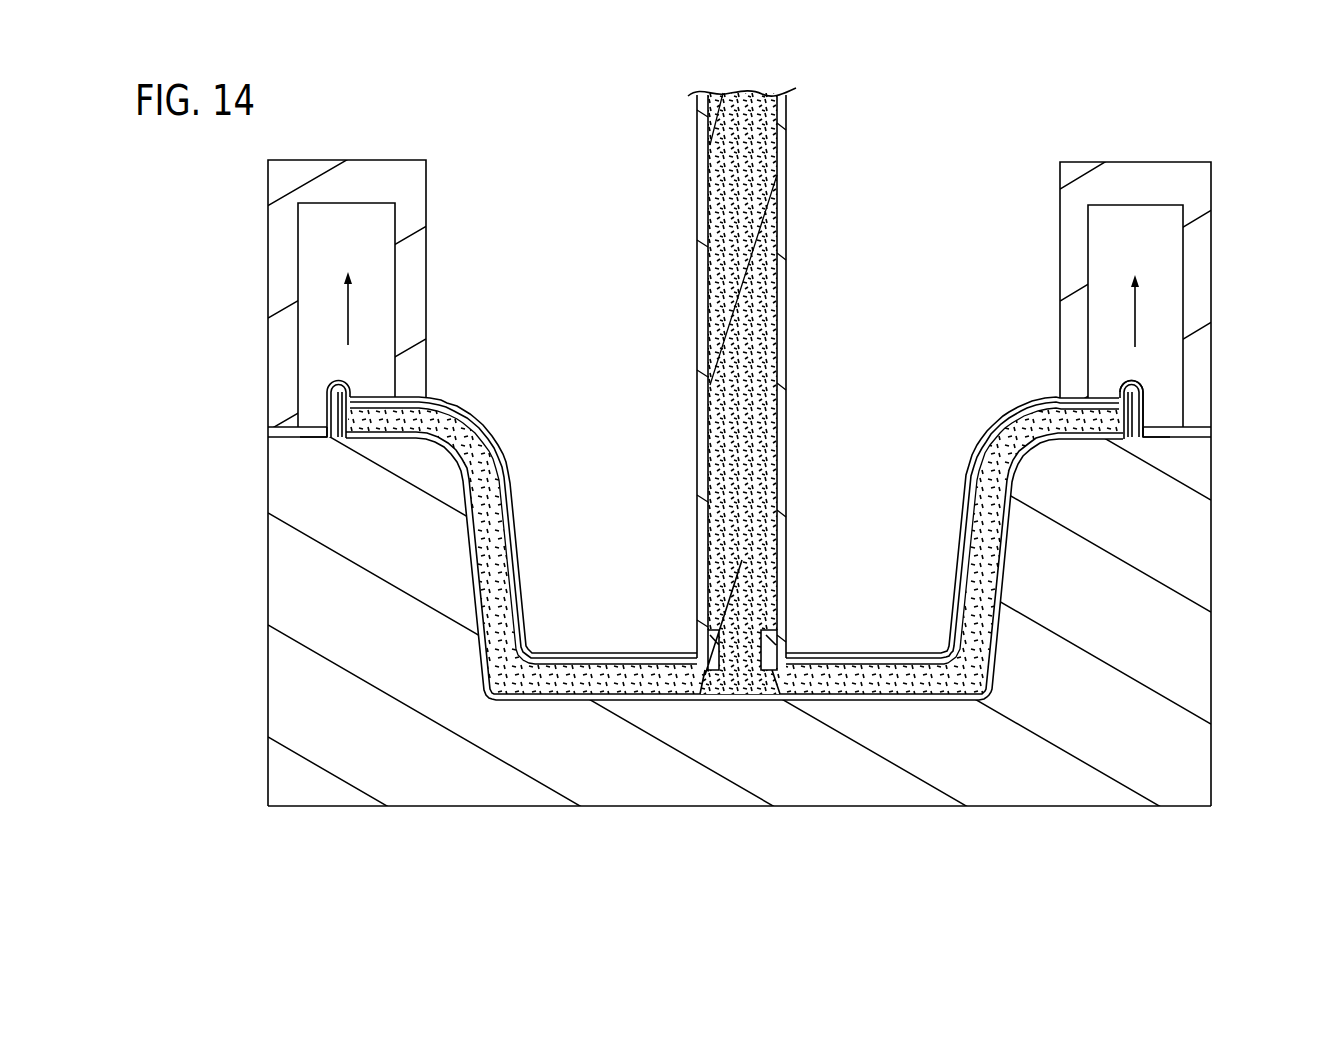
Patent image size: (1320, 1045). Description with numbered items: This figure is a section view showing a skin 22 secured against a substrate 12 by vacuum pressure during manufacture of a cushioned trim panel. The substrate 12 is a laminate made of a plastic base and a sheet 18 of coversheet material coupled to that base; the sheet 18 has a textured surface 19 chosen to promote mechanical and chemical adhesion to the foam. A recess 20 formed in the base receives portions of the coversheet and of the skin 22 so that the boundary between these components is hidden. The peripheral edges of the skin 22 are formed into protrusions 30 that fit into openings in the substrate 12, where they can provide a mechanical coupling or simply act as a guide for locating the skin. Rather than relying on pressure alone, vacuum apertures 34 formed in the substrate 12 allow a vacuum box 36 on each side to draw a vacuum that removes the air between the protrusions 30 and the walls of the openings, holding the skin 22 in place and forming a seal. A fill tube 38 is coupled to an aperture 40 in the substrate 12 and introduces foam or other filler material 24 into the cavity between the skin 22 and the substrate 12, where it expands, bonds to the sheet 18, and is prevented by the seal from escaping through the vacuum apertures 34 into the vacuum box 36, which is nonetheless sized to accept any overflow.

The substrate 12 is at (428, 396).
The sheet 18 is at (296, 440).
The surface 19 is at (316, 446).
The recess 20 is at (1144, 452).
The skin 22 is at (757, 706).
The filler material 24 is at (1028, 442).
The protrusion 30 is at (1148, 394).
The vacuum aperture 34 is at (1132, 372).
The vacuum box 36 is at (1172, 160).
The fill tube 38 is at (708, 391).
The aperture 40 is at (737, 640).